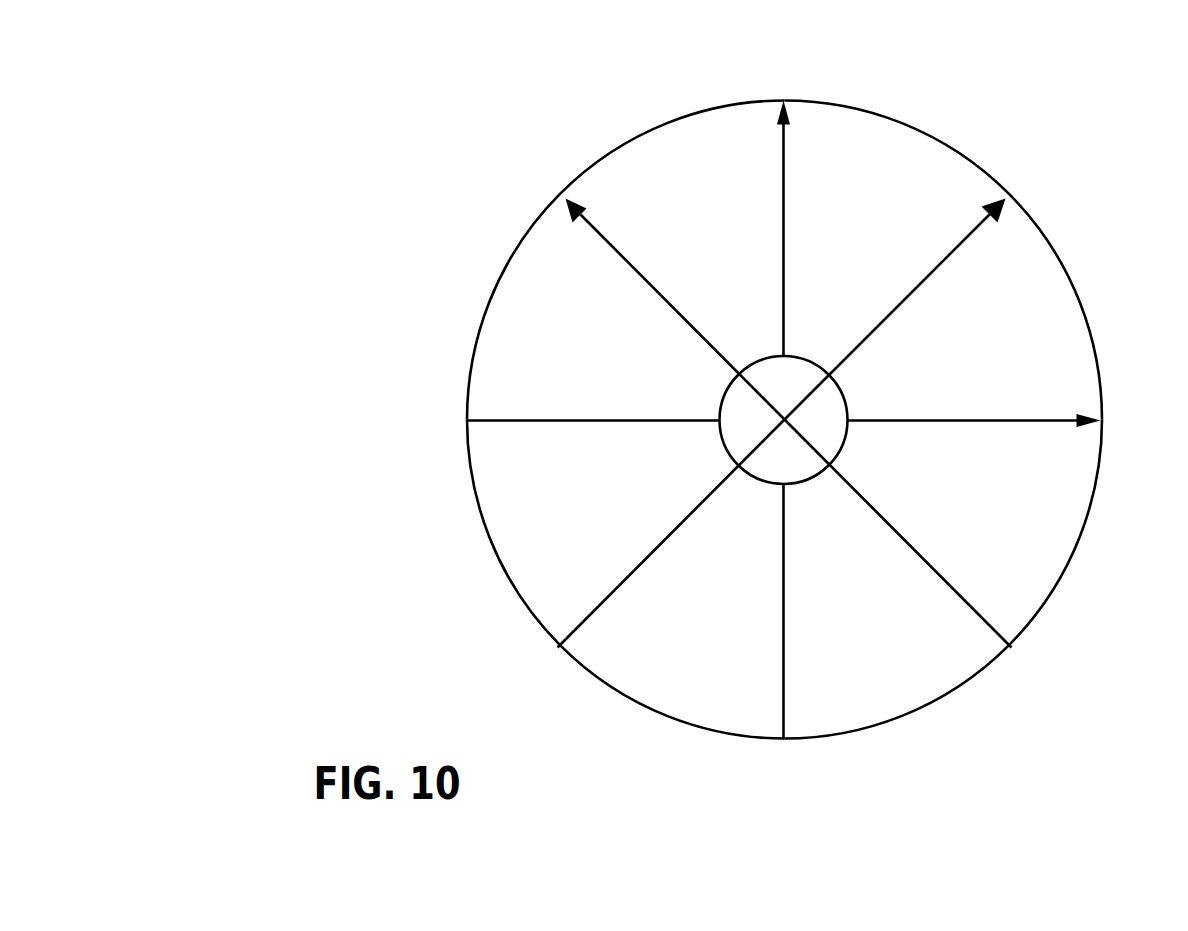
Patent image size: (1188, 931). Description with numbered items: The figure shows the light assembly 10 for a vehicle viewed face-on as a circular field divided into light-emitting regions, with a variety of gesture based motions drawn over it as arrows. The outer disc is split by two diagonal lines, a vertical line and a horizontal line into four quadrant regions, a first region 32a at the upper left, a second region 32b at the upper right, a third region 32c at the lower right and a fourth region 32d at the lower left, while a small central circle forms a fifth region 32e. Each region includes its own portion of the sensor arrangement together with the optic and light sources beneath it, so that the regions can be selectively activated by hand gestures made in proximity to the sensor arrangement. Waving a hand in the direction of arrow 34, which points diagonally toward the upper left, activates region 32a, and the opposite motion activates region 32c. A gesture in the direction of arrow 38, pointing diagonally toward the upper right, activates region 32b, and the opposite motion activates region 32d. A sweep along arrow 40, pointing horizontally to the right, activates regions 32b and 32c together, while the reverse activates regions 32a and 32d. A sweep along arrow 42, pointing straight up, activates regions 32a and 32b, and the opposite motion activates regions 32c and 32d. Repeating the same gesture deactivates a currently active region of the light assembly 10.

The light assembly 10 is at (603, 128).
The first region 32a is at (679, 266).
The second region 32b is at (895, 280).
The third region 32c is at (908, 590).
The fourth region 32d is at (688, 598).
The fifth region 32e is at (799, 470).
The arrow 34 is at (600, 237).
The arrow 38 is at (968, 238).
The arrow 40 is at (1037, 422).
The arrow 42 is at (784, 163).